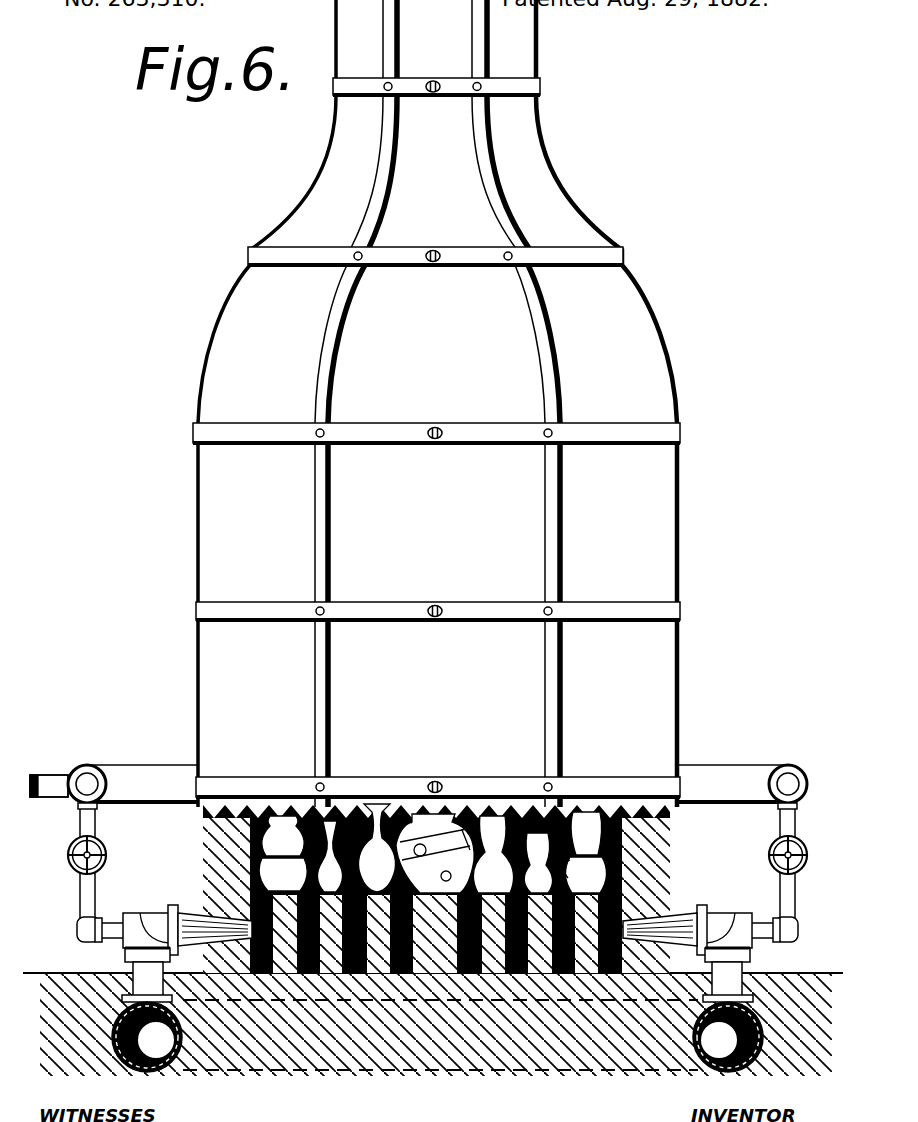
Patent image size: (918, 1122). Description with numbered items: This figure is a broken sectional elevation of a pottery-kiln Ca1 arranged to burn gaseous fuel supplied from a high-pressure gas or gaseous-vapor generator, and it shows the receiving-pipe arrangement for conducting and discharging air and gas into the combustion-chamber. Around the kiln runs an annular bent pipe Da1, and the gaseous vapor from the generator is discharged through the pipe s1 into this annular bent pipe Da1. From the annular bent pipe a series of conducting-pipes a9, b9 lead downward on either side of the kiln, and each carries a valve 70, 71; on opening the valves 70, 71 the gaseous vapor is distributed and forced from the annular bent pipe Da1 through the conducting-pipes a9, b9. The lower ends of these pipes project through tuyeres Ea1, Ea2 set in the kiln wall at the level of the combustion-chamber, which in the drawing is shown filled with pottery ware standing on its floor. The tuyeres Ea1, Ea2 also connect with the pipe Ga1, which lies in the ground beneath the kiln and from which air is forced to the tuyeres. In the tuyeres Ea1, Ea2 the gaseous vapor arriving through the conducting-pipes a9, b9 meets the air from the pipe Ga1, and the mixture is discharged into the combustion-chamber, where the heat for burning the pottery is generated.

The pottery-kiln Ca1 is at (436, 486).
The annular bent pipe Da1 is at (418, 759).
The pipe s1 is at (49, 772).
The conducting-pipe a9 is at (102, 887).
The conducting-pipe b9 is at (787, 886).
The valve 70 is at (104, 855).
The valve 71 is at (773, 855).
The tuyere Ea1 is at (187, 933).
The tuyere Ea2 is at (688, 932).
The pipe Ga1 is at (469, 1037).